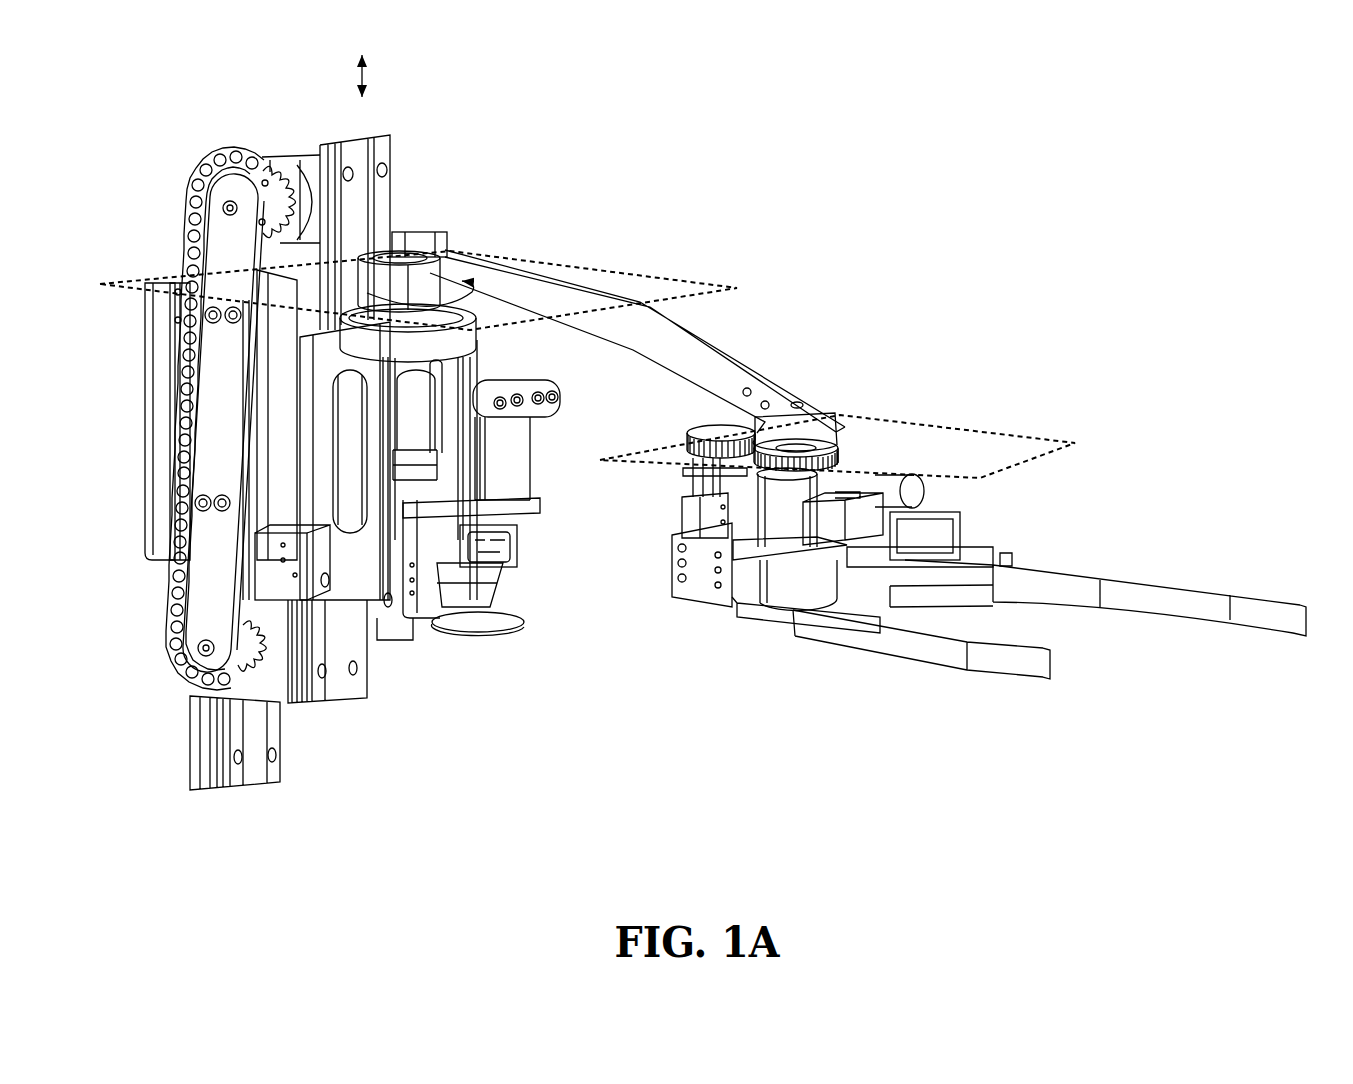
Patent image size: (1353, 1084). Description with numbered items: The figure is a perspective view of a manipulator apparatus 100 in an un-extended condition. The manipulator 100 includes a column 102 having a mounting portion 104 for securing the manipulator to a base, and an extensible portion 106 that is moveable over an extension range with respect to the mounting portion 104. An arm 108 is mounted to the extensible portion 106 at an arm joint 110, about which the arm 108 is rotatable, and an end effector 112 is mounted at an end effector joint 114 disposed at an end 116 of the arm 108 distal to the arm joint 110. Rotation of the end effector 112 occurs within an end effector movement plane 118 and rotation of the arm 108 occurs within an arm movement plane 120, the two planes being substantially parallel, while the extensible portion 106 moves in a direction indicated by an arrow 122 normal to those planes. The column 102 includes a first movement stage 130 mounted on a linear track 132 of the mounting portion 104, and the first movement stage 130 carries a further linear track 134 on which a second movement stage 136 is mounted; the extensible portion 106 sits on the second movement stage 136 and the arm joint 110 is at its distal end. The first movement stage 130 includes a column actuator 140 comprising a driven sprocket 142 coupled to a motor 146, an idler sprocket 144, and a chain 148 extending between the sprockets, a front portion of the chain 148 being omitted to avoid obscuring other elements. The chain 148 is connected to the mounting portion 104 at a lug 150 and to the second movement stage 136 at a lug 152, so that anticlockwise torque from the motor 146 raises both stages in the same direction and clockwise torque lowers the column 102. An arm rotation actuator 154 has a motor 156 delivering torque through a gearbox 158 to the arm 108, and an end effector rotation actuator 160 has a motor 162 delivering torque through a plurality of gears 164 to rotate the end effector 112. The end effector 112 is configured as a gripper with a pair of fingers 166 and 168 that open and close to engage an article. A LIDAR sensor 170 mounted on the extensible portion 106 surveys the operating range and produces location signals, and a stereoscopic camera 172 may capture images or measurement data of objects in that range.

The manipulator apparatus 100 is at (957, 128).
The column 102 is at (383, 112).
The mounting portion 104 is at (143, 530).
The extensible portion 106 is at (490, 346).
The arm 108 is at (537, 277).
The arm joint 110 is at (405, 252).
The end effector 112 is at (1035, 621).
The end effector joint 114 is at (848, 460).
The end of the arm 116 is at (815, 392).
The end effector movement plane 118 is at (1022, 440).
The arm movement plane 120 is at (688, 290).
The direction arrow 122 is at (353, 78).
The first movement stage 130 is at (273, 460).
The linear track 132 is at (253, 770).
The further linear track 134 is at (336, 685).
The second movement stage 136 is at (303, 418).
The column actuator 140 is at (190, 151).
The driven sprocket 142 is at (226, 152).
The idler sprocket 144 is at (222, 683).
The motor 146 is at (304, 157).
The chain 148 is at (185, 243).
The lug 150 is at (182, 303).
The lug 152 is at (260, 563).
The arm rotation actuator 154 is at (593, 475).
The motor 156 is at (345, 522).
The gearbox 158 is at (480, 447).
The end effector rotation actuator 160 is at (630, 663).
The motor 162 is at (698, 520).
The gears 164 is at (770, 462).
The finger 166 is at (998, 658).
The finger 168 is at (1297, 603).
The sensor 170 is at (445, 557).
The stereoscopic camera 172 is at (560, 397).